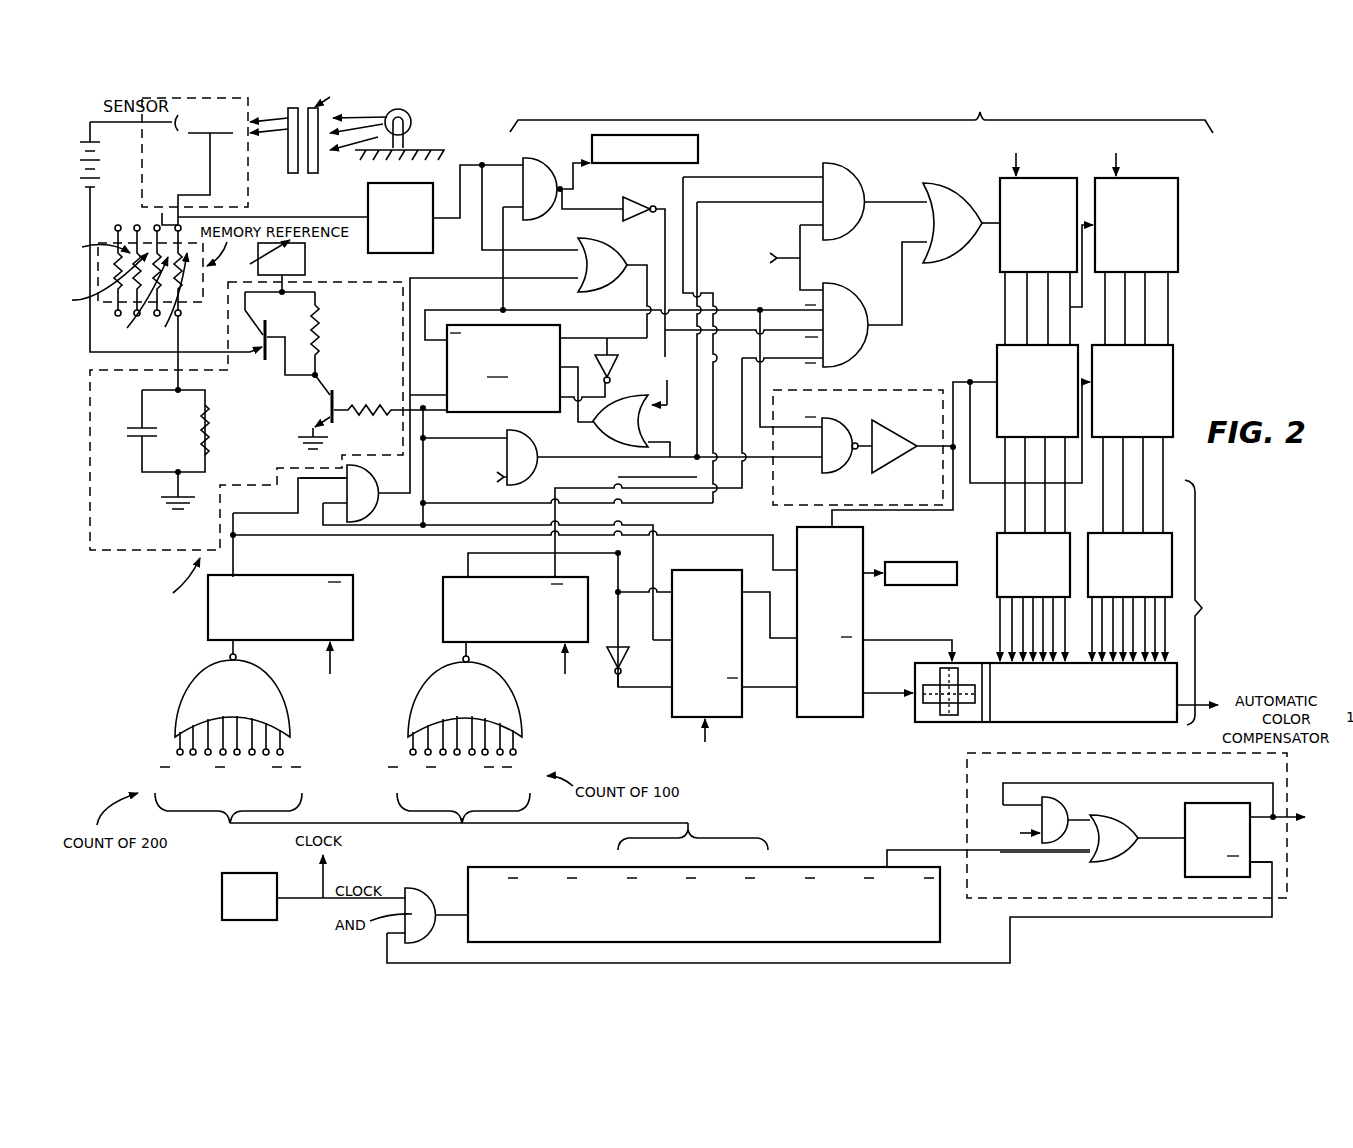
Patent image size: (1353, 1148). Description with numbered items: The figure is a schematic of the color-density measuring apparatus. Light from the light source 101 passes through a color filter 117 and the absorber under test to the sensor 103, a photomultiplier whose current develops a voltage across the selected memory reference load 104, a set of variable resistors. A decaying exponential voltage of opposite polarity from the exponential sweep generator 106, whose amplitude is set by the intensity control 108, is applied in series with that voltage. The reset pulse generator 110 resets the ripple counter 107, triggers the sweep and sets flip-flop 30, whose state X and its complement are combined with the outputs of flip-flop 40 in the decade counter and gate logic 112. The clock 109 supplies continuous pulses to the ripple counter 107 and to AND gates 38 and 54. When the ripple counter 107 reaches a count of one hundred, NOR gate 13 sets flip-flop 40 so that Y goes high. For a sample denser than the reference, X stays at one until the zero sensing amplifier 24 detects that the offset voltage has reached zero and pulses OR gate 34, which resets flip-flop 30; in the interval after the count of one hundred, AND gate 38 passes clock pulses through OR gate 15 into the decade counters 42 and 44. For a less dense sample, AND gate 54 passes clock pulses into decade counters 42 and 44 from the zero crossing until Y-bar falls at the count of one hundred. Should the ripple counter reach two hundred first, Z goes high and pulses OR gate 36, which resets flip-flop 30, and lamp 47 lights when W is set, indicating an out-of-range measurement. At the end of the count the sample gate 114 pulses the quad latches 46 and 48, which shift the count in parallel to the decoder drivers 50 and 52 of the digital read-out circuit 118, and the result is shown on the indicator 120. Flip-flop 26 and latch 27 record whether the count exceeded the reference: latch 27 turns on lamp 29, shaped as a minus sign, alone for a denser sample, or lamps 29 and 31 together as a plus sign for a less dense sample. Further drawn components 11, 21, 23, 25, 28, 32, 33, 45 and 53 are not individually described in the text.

The sweep generator RC network 11 is at (167, 447).
The NOR gate 13 is at (435, 705).
The OR gate 15 is at (949, 198).
The AND gate 21 is at (370, 495).
The count-of-200 NOR gate 23 is at (267, 705).
The zero sensing amplifier 24 is at (382, 200).
The Z flip-flop 25 is at (340, 603).
The flip-flop 26 is at (713, 656).
The latch 27 is at (847, 605).
The transistor 28 is at (335, 385).
The lamp 29 is at (932, 698).
The flip-flop 30 is at (536, 366).
The lamp 31 is at (950, 713).
The AND gate 32 is at (568, 160).
The AND gate 33 is at (528, 445).
The OR gate 34 is at (615, 246).
The OR gate 36 is at (612, 432).
The AND gate 38 is at (848, 192).
The flip-flop 40 is at (460, 598).
The decade counter 42 is at (1025, 228).
The decade counter 44 is at (1168, 222).
The lamp 45 is at (912, 585).
The quad latch 46 is at (996, 368).
The lamp 47 is at (698, 150).
The quad latch 48 is at (1172, 350).
The decoder driver 50 is at (998, 570).
The decoder driver 52 is at (1096, 567).
The inverter 53 is at (633, 196).
The AND gate 54 is at (848, 310).
The light source 101 is at (415, 121).
The sensor 103 is at (248, 100).
The memory reference load 104 is at (179, 346).
The exponential sweep generator 106 is at (292, 484).
The ripple counter 107 is at (902, 930).
The intensity control 108 is at (308, 265).
The clock 109 is at (235, 897).
The reset pulse generator 110 is at (1282, 873).
The decade counter and gate logic 112 is at (861, 114).
The sample gate 114 is at (864, 458).
The color filter 117 is at (292, 177).
The digital read-out circuit 118 is at (1239, 602).
The indicator 120 is at (1065, 706).